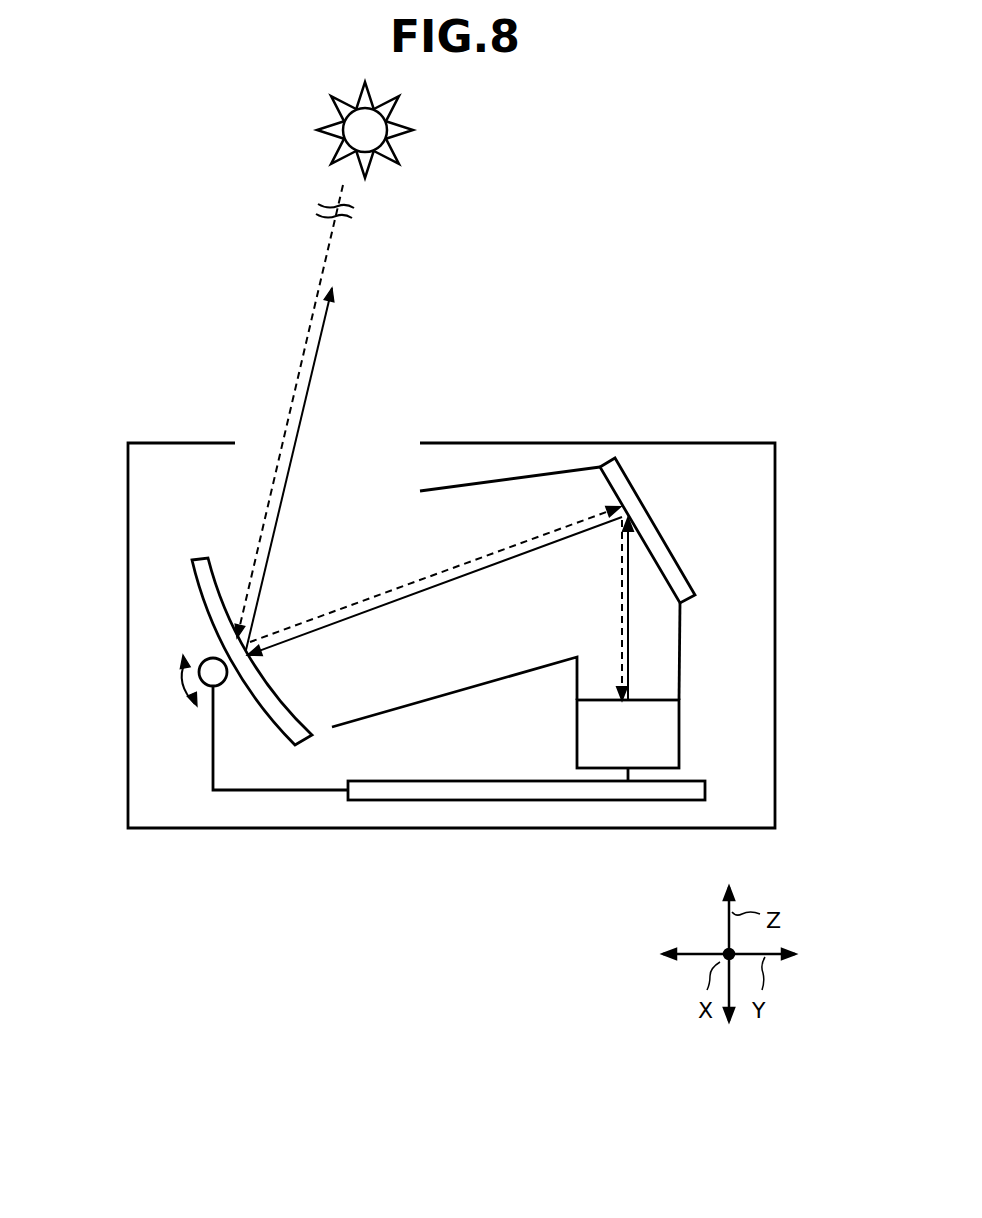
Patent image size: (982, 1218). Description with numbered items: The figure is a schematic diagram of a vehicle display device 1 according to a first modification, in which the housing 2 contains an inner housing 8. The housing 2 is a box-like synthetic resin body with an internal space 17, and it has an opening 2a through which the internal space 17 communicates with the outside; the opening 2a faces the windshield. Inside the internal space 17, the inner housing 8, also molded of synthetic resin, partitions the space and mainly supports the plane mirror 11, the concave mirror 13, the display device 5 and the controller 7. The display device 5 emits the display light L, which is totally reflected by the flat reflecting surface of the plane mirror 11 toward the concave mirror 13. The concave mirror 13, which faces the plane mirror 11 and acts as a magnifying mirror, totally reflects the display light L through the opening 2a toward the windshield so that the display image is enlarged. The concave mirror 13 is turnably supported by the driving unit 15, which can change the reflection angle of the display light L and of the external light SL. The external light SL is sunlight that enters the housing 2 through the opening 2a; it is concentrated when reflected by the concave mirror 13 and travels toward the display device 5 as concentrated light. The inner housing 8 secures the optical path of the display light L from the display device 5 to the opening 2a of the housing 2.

The vehicle display device 1 is at (756, 382).
The housing 2 is at (724, 443).
The opening 2a is at (398, 440).
The display device 5 is at (692, 736).
The controller 7 is at (706, 791).
The inner housing 8 is at (511, 470).
The plane mirror 11 is at (640, 498).
The concave mirror 13 is at (195, 590).
The driving unit 15 is at (203, 661).
The internal space 17 is at (758, 500).
The external light SL is at (325, 238).
The display light L is at (283, 516).